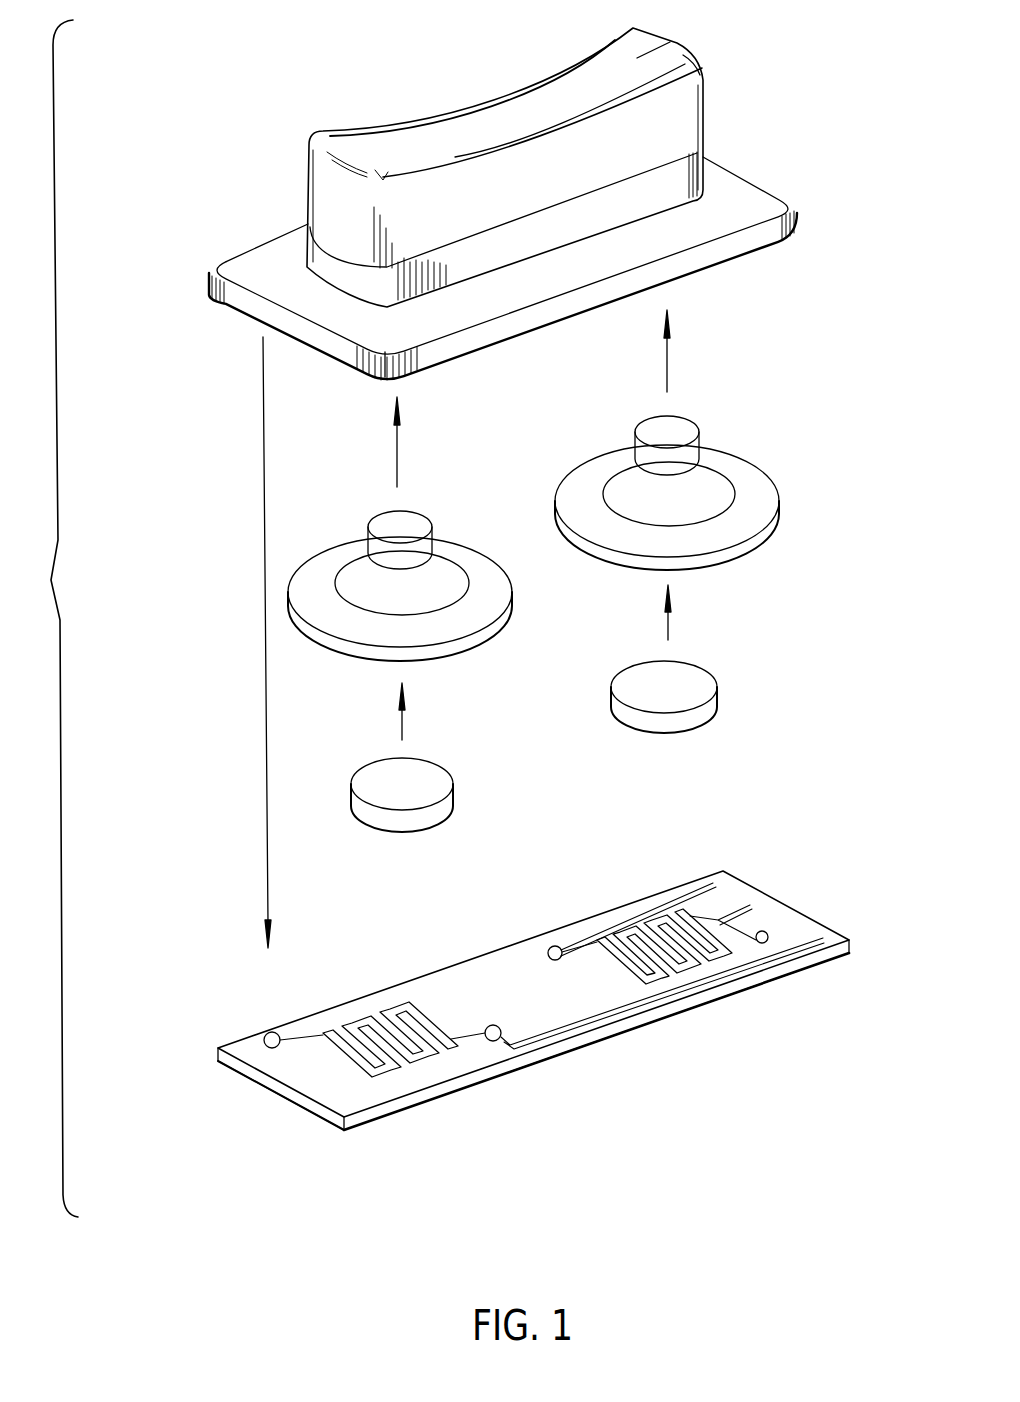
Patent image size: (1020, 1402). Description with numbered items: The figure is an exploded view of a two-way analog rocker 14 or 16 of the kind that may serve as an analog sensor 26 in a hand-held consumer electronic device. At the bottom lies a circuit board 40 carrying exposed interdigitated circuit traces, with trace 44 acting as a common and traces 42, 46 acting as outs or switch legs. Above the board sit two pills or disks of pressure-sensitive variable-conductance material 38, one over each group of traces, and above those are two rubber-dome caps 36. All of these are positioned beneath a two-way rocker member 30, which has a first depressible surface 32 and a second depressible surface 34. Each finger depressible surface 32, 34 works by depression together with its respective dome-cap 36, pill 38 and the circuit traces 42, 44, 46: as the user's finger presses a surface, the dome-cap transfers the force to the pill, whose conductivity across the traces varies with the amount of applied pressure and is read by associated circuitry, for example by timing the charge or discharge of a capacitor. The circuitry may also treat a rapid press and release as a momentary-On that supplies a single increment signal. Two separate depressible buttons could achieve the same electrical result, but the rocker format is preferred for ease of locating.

The rocker 14 is at (140, 183).
The rocker 16 is at (180, 325).
The analog sensor 26 is at (730, 627).
The 2-way rocker member 30 is at (707, 127).
The first depressible surface 32 is at (438, 133).
The second depressible surface 34 is at (637, 58).
The rubber-dome cap 36 is at (392, 522).
The pill of pressure-sensitive variable-conductance material 38 is at (430, 773).
The circuit board 40 is at (703, 1005).
The circuit trace 42 is at (717, 875).
The circuit trace 44 is at (822, 940).
The circuit trace 46 is at (292, 1033).